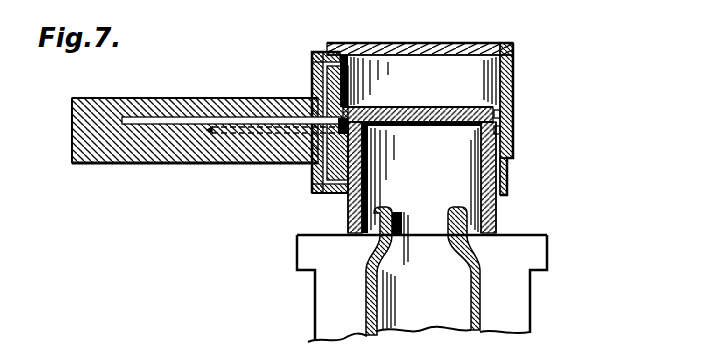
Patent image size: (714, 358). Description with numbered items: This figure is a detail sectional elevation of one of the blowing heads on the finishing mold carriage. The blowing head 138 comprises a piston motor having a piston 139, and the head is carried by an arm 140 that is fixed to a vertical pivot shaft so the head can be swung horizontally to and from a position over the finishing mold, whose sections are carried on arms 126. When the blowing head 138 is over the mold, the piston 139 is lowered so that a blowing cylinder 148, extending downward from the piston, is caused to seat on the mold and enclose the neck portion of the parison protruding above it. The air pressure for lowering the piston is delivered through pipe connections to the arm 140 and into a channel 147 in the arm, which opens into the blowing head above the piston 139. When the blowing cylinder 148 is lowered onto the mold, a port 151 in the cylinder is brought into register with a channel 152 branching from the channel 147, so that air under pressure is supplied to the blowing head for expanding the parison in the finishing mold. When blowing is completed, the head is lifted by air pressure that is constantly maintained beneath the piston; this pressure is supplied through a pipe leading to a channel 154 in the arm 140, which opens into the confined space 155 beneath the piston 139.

The arms 126 is at (517, 307).
The blowing head 138 is at (431, 43).
The piston 139 is at (432, 106).
The arm 140 is at (187, 164).
The channel 147 is at (146, 120).
The blowing cylinder 148 is at (498, 219).
The port 151 is at (350, 197).
The channel 152 is at (313, 174).
The channel 154 is at (210, 130).
The confined space 155 is at (515, 131).